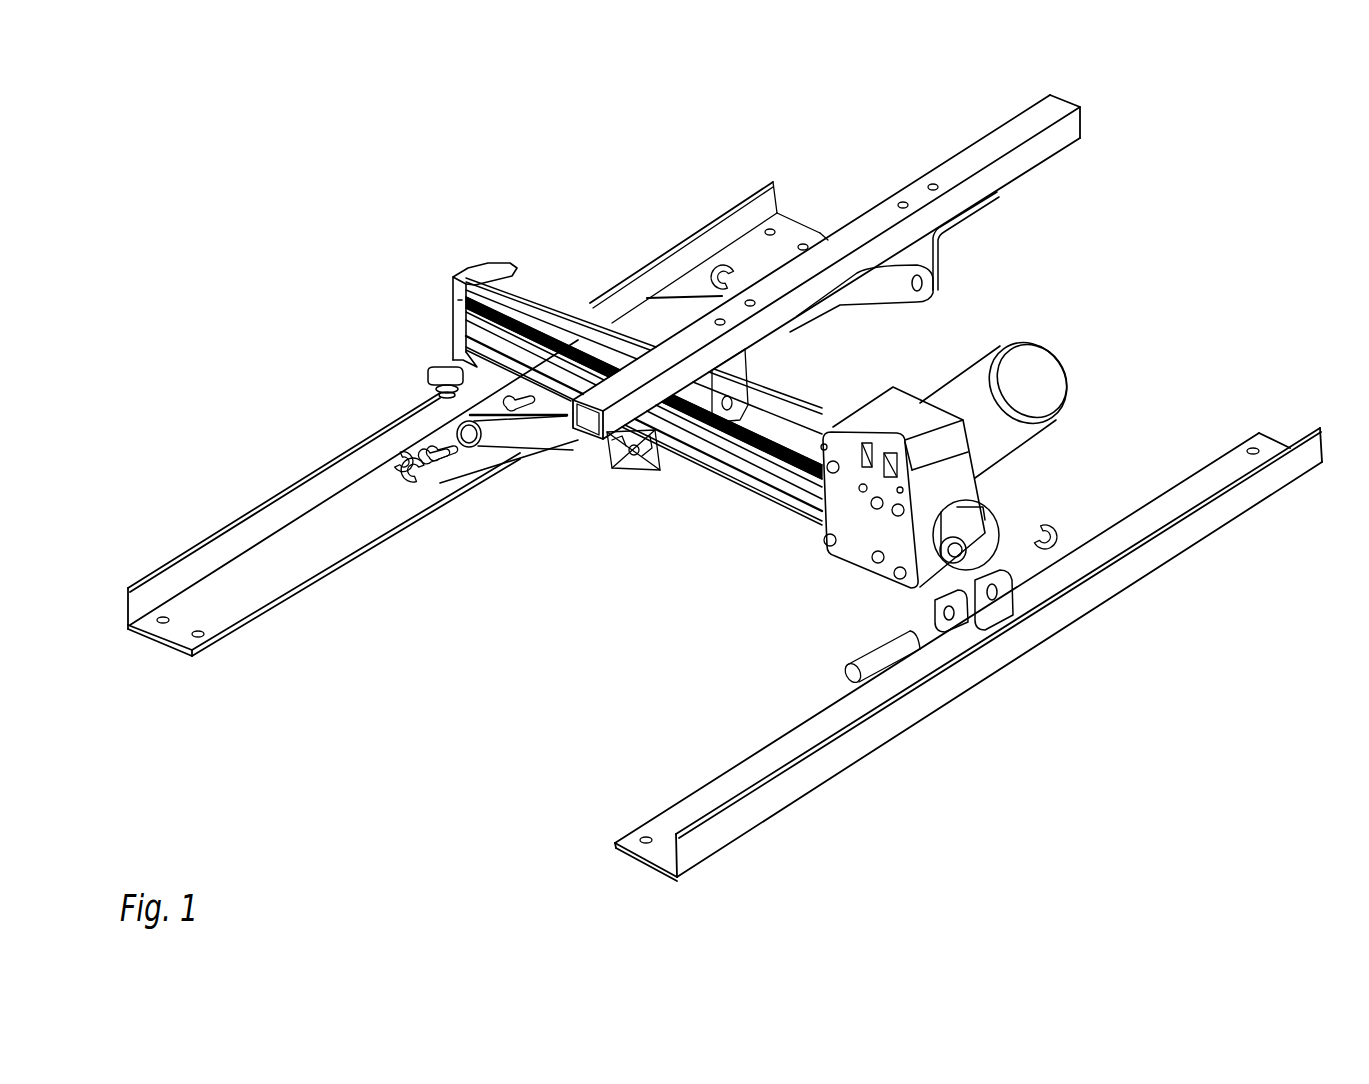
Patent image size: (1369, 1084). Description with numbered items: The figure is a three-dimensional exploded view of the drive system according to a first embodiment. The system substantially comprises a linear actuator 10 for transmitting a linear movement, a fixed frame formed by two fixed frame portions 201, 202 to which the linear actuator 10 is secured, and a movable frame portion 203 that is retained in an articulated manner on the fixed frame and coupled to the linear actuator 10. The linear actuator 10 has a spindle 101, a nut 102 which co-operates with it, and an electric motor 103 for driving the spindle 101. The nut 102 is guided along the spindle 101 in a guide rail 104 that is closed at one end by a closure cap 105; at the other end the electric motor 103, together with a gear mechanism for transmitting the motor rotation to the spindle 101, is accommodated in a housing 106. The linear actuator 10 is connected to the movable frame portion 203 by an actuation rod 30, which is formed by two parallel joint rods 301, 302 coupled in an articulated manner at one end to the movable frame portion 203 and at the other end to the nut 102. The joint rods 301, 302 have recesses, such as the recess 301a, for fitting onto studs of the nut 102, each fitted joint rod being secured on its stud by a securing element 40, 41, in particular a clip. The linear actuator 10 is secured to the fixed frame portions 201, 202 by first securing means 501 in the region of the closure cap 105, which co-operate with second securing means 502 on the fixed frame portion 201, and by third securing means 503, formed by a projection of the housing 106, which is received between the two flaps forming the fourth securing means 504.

The linear actuator 10 is at (807, 396).
The actuation rod 30 is at (507, 464).
The securing element 40 is at (400, 464).
The securing element 41 is at (727, 262).
The spindle 101 is at (767, 463).
The nut 102 is at (648, 470).
The electric motor 103 is at (1005, 388).
The guide rail 104 is at (776, 396).
The closure cap 105 is at (510, 266).
The housing 106 is at (857, 527).
The fixed frame portion 201 is at (243, 583).
The fixed frame portion 202 is at (889, 724).
The movable frame portion 203 is at (1062, 130).
The joint rod 301 is at (893, 284).
The recess 301a is at (427, 445).
The joint rod 302 is at (558, 438).
The first securing means 501 is at (440, 388).
The second securing means 502 is at (405, 458).
The third securing means 503 is at (970, 544).
The fourth securing means 504 is at (961, 633).